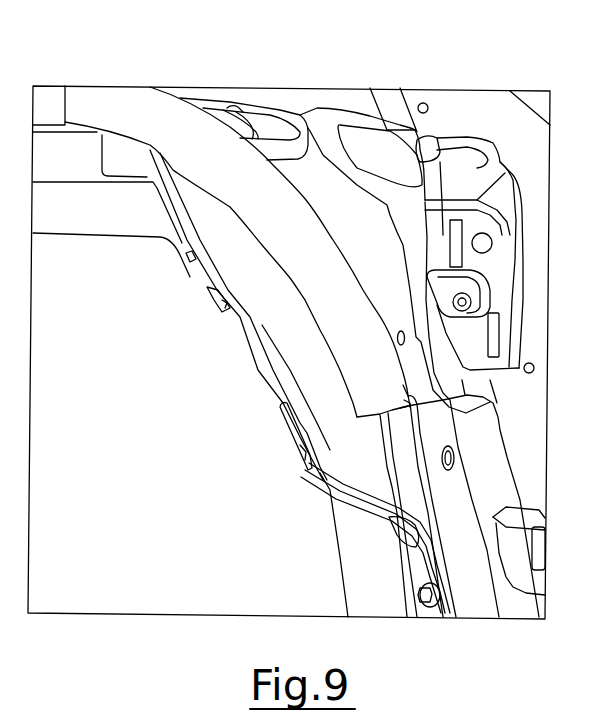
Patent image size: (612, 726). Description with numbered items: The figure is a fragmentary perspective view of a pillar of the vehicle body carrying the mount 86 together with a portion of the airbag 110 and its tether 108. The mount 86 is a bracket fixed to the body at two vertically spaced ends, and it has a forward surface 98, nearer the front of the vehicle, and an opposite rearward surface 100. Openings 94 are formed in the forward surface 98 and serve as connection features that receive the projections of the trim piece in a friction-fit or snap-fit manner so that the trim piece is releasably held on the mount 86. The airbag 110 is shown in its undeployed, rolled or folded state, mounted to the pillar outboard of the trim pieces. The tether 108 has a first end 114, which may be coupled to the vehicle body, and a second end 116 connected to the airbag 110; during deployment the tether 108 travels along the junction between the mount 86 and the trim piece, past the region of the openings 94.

The mount 86 is at (255, 379).
The openings 94 is at (227, 307).
The forward surface 98 is at (200, 268).
The rearward surface 100 is at (403, 467).
The tether 108 is at (392, 450).
The airbag 110 is at (173, 115).
The first end 114 is at (448, 600).
The second end 116 is at (380, 417).